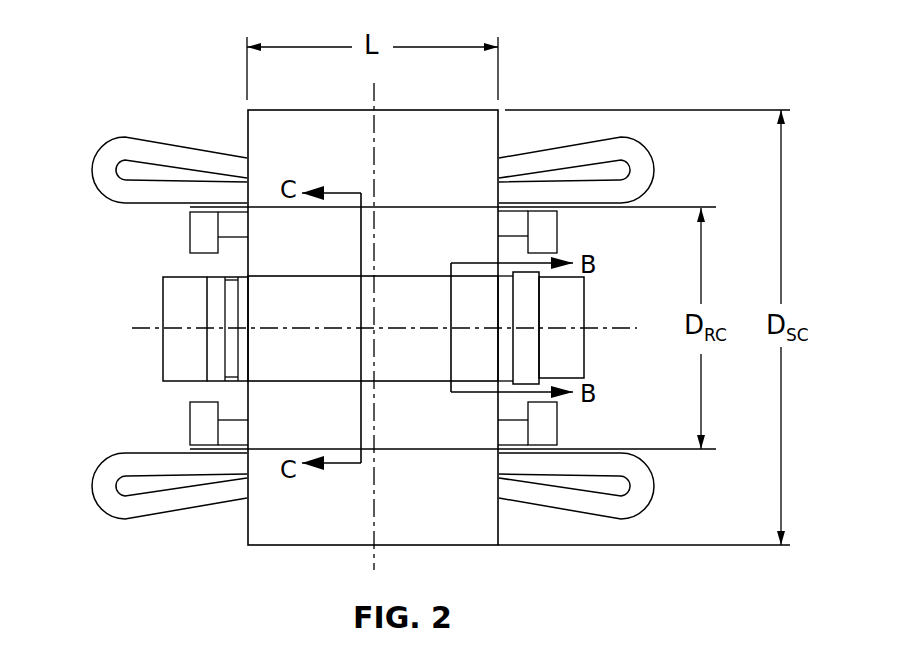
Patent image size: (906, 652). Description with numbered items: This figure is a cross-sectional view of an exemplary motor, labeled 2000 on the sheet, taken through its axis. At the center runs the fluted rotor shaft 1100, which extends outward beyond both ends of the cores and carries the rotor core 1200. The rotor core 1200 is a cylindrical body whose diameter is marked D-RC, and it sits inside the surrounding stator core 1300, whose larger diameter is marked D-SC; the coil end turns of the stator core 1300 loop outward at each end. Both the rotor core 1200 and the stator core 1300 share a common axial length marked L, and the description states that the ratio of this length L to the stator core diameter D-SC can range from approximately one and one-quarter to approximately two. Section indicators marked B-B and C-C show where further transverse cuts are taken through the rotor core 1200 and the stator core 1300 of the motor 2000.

The electric motor 2000 is at (178, 46).
The stator core 1300 is at (247, 128).
The rotor core 1200 is at (247, 263).
The fluted rotor shaft 1100 is at (163, 353).